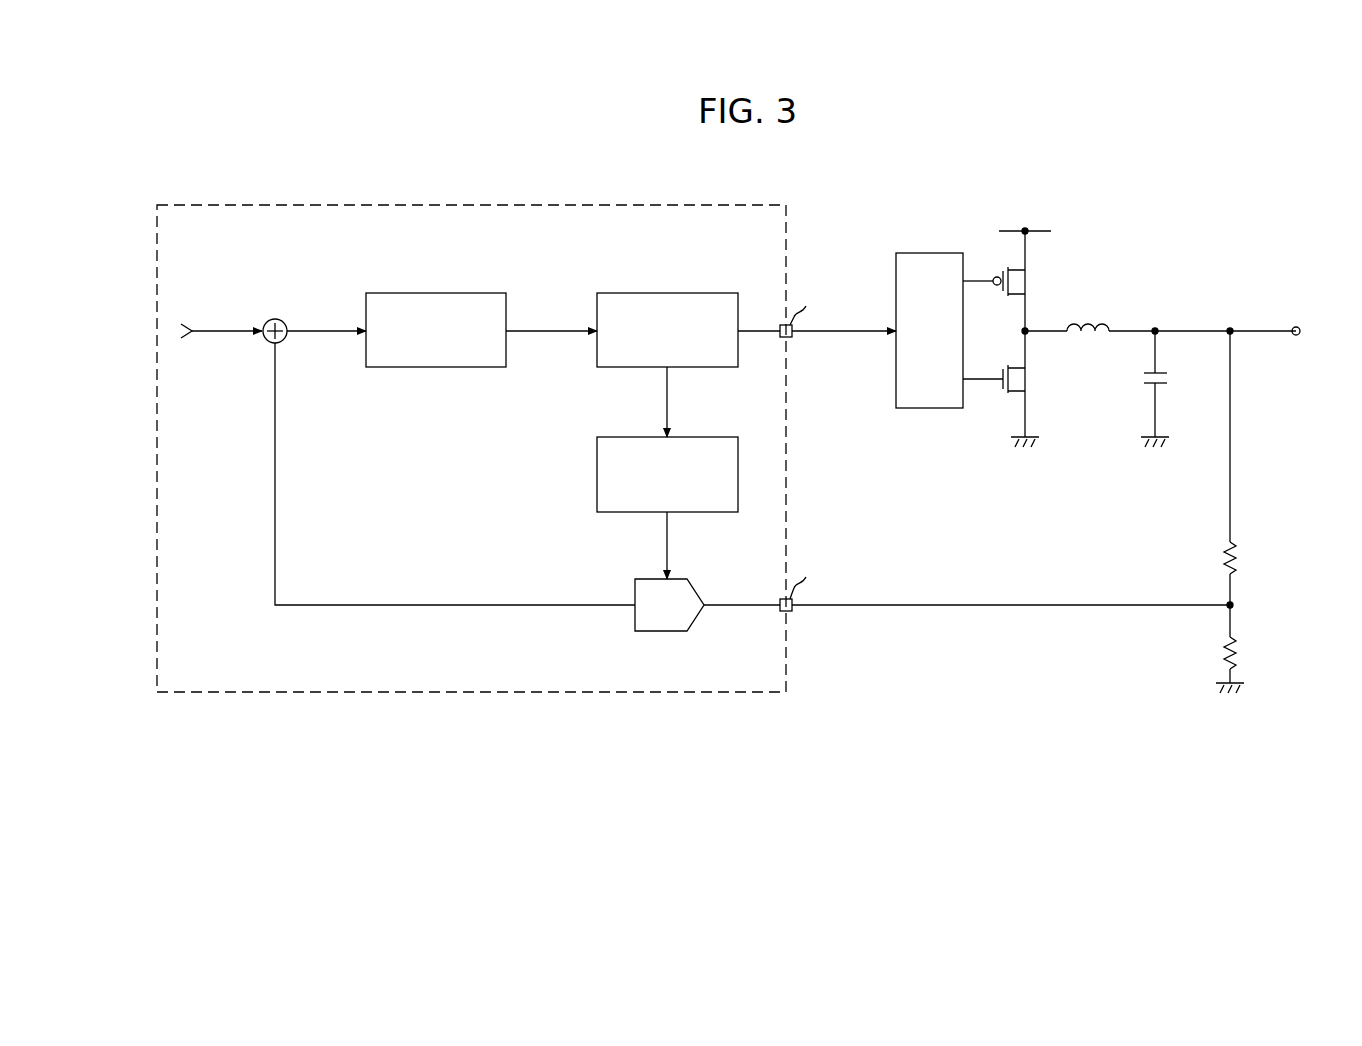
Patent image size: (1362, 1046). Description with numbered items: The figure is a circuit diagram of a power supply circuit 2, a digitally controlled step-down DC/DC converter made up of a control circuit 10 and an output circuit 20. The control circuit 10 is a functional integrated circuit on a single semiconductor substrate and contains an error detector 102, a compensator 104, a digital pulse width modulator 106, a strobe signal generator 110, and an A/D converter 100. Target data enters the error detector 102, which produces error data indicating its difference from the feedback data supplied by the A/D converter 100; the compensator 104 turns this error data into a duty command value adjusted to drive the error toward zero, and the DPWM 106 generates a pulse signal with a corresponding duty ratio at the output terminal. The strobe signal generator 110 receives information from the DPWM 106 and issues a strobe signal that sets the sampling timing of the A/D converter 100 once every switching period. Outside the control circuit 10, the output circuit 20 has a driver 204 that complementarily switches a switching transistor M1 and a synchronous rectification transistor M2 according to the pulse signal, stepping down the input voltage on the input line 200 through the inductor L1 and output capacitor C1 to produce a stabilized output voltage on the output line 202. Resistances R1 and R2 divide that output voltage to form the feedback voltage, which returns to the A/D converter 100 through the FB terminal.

The power supply circuit 2 is at (728, 804).
The control circuit 10 is at (592, 205).
The output circuit 20 is at (1305, 710).
The A/D converter 100 is at (660, 631).
The error detector 102 is at (282, 319).
The compensator 104 is at (445, 293).
The digital pulse width modulator (DPWM) 106 is at (696, 293).
The strobe signal generator 110 is at (691, 437).
The input line 200 is at (1048, 226).
The output line 202 is at (1186, 331).
The driver 204 is at (928, 408).
The switching transistor M1 is at (1030, 281).
The synchronous rectification transistor M2 is at (1030, 379).
The inductor L1 is at (1100, 324).
The output capacitor C1 is at (1146, 378).
The resistance R1 is at (1242, 557).
The resistance R2 is at (1242, 651).